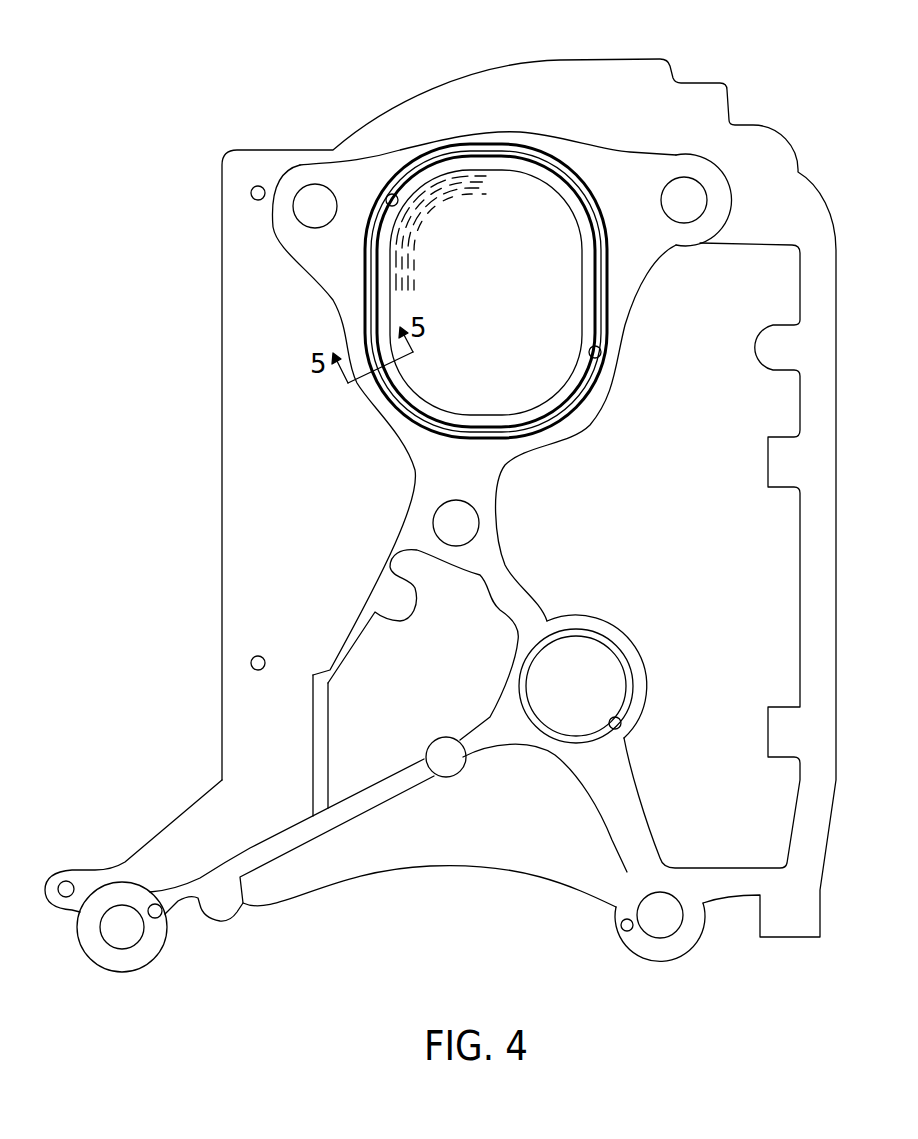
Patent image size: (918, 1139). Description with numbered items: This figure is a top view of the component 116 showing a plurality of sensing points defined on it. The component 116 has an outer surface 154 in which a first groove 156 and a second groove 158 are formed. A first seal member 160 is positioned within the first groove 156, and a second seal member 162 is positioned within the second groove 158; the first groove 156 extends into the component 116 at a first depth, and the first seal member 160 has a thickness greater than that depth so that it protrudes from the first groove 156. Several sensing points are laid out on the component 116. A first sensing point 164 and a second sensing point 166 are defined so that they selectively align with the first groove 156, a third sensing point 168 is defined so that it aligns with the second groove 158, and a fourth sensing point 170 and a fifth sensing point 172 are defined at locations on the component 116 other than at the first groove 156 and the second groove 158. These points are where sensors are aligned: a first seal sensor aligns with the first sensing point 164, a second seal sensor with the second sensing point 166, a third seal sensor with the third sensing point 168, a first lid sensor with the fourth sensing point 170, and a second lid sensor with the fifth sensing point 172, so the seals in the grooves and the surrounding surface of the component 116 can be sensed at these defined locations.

The component 116 is at (440, 515).
The outer surface 154 is at (637, 187).
The first groove 156 is at (612, 258).
The second groove 158 is at (616, 624).
The first seal member 160 is at (568, 395).
The second seal member 162 is at (627, 668).
The first sensing point 164 is at (388, 195).
The second sensing point 166 is at (600, 355).
The third sensing point 168 is at (620, 727).
The fourth sensing point 170 is at (160, 917).
The fifth sensing point 172 is at (621, 924).